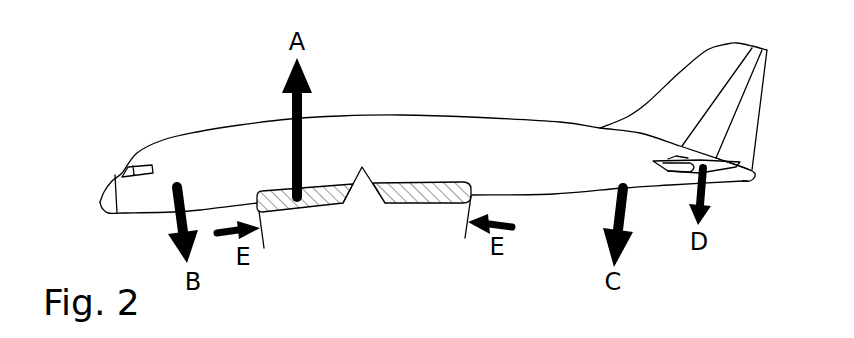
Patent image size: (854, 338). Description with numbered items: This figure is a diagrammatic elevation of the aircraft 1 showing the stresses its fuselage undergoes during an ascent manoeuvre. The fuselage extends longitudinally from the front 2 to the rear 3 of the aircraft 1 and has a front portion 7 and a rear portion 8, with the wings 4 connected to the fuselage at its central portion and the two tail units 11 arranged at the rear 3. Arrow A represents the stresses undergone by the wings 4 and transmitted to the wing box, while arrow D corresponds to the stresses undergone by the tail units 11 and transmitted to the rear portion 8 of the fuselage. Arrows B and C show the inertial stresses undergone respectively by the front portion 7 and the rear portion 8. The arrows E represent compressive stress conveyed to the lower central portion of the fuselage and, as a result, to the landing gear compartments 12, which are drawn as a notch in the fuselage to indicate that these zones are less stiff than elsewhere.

The aircraft 1 is at (165, 100).
The front 2 is at (86, 147).
The rear 3 is at (738, 216).
The wings 4 is at (410, 205).
The front portion 7 is at (203, 210).
The rear portion 8 is at (553, 196).
The tail units 11 is at (730, 167).
The landing gear compartments 12 is at (362, 201).